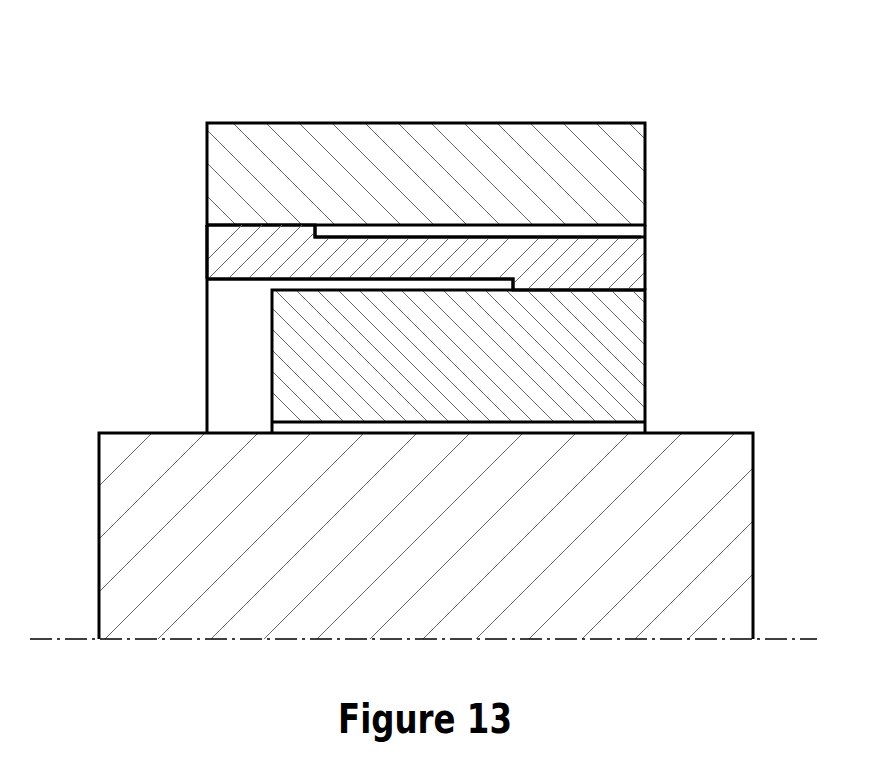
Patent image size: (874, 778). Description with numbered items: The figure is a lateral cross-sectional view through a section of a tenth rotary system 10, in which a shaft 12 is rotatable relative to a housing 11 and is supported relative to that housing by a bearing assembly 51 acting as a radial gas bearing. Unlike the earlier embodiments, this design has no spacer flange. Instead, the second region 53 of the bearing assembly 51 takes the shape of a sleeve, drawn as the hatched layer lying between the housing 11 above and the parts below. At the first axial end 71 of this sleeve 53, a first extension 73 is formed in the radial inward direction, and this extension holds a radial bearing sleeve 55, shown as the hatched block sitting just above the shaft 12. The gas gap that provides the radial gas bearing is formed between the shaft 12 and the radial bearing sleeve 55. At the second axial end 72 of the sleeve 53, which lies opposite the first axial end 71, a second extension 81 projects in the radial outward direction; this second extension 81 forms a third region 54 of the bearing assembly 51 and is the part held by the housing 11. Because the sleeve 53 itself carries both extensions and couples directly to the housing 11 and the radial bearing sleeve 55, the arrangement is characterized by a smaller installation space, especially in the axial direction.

The rotary system 10 is at (452, 333).
The housing 11 is at (627, 173).
The shaft 12 is at (733, 537).
The bearing assembly 51 is at (476, 254).
The second region (sleeve) 53 is at (442, 260).
The third region 54 is at (407, 199).
The second extension 81 is at (426, 257).
The radial bearing sleeve 55 is at (627, 363).
The first axial end 71 is at (633, 248).
The second axial end 72 is at (212, 268).
The first extension 73 is at (633, 283).